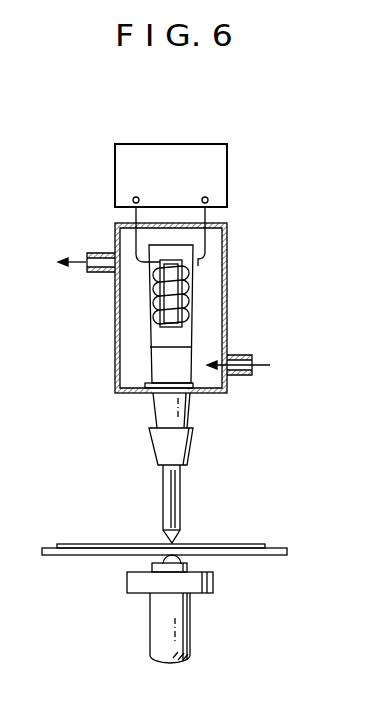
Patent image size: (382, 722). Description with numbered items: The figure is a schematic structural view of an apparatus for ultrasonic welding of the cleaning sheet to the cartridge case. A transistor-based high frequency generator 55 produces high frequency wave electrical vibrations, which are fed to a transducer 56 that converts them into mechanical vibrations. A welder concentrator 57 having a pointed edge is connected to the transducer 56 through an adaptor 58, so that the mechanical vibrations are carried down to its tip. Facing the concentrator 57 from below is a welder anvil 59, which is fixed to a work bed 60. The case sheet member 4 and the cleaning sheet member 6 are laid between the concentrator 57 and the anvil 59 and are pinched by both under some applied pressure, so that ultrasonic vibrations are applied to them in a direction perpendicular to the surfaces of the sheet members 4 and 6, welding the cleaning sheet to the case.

The high frequency generator 55 is at (227, 166).
The transducer 56 is at (196, 296).
The welder concentrator 57 is at (176, 505).
The adaptor 58 is at (163, 364).
The welder anvil 59 is at (186, 560).
The work bed 60 is at (138, 590).
The cleaning sheet member 6 is at (96, 544).
The case sheet member 4 is at (62, 556).